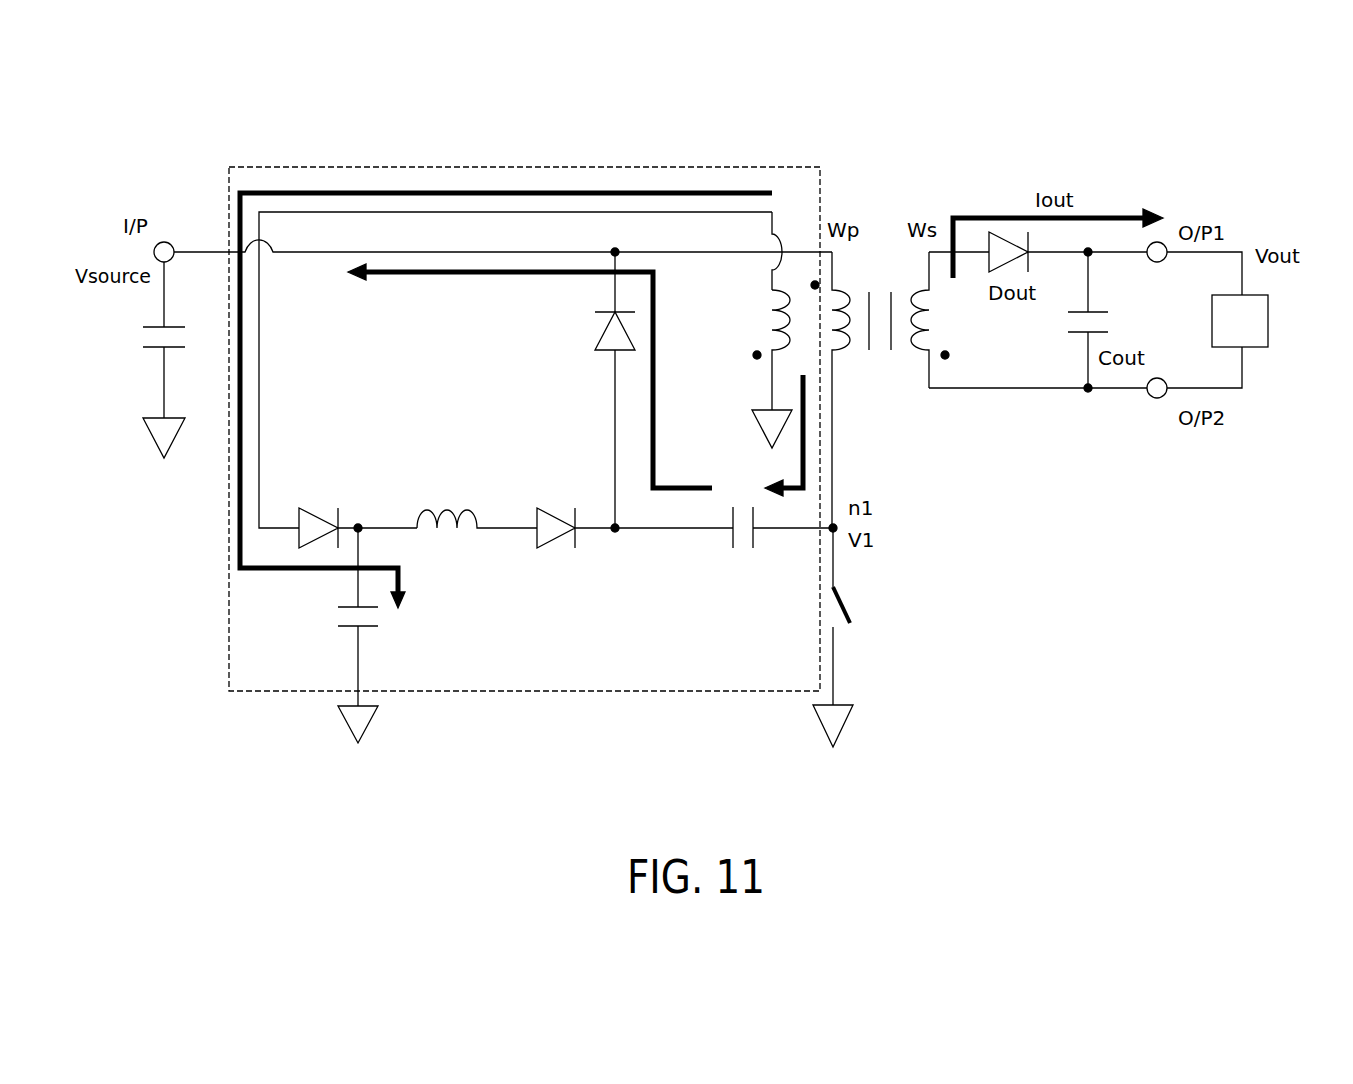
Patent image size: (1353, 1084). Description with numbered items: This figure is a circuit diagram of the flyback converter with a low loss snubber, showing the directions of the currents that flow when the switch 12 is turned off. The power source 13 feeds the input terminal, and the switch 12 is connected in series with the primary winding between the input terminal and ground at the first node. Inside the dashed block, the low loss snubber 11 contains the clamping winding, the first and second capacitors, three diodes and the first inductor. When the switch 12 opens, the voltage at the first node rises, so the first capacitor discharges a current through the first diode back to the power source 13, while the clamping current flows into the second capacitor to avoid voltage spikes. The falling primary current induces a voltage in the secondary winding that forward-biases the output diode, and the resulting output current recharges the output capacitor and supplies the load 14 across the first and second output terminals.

The low loss snubber 11 is at (753, 167).
The switch 12 is at (859, 607).
The power source 13 is at (147, 352).
The load 14 is at (1268, 320).